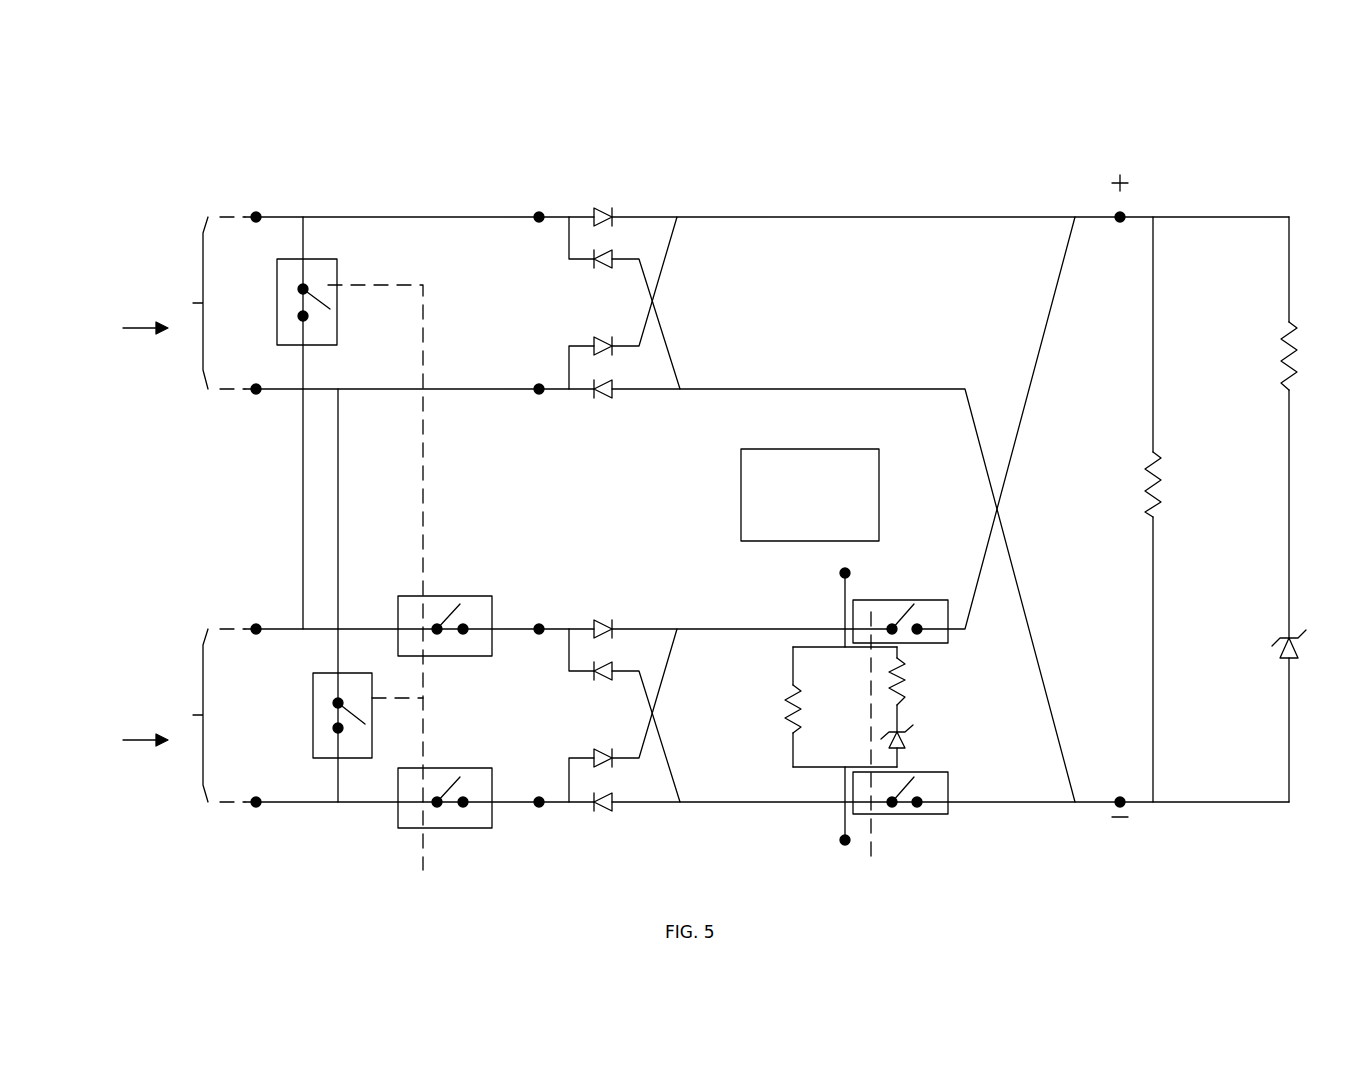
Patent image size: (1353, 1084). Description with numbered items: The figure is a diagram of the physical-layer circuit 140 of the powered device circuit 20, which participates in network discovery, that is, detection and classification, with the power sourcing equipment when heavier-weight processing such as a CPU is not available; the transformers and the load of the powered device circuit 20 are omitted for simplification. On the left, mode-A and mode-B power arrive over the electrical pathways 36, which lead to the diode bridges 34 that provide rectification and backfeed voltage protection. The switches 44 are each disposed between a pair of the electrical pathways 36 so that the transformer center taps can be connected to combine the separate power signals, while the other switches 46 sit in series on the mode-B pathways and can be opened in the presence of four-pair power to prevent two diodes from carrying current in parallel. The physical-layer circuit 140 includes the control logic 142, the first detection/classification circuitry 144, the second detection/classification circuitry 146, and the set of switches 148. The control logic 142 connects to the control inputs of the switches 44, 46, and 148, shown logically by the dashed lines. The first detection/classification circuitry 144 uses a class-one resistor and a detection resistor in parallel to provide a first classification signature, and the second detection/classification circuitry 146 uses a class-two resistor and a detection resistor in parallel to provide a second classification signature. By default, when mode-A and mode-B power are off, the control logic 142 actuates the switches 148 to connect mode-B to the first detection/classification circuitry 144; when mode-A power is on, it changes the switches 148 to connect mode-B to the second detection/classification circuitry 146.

The powered device circuit 20 is at (1248, 101).
The diode bridges 34 is at (664, 110).
The electrical pathways 36 is at (536, 151).
The switches 44 is at (346, 187).
The switches 46 is at (504, 520).
The physical-layer circuit 140 is at (798, 320).
The control logic 142 is at (810, 495).
The first detection/classification circuitry 144 is at (1108, 356).
The second detection/classification circuitry 146 is at (746, 665).
The switches 148 is at (932, 513).